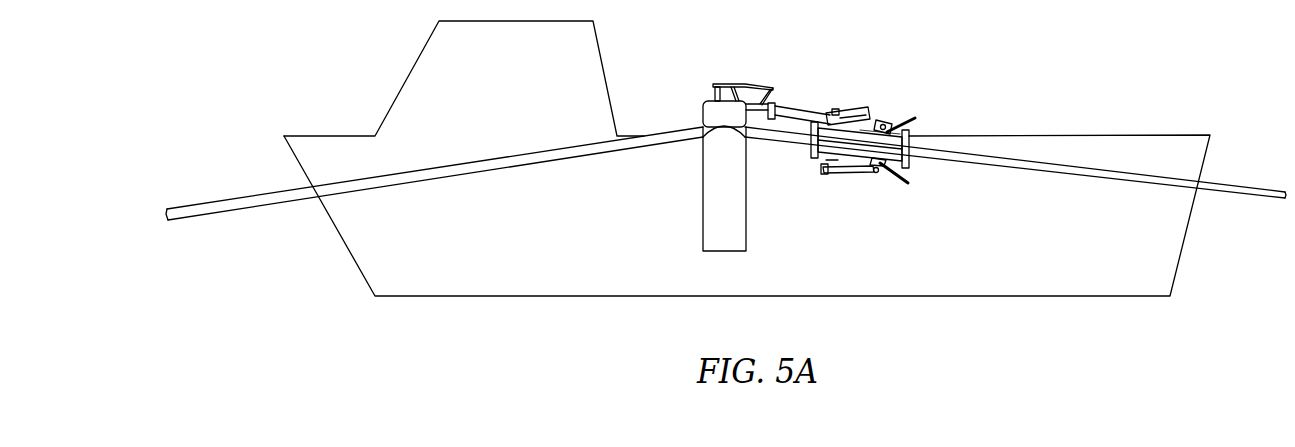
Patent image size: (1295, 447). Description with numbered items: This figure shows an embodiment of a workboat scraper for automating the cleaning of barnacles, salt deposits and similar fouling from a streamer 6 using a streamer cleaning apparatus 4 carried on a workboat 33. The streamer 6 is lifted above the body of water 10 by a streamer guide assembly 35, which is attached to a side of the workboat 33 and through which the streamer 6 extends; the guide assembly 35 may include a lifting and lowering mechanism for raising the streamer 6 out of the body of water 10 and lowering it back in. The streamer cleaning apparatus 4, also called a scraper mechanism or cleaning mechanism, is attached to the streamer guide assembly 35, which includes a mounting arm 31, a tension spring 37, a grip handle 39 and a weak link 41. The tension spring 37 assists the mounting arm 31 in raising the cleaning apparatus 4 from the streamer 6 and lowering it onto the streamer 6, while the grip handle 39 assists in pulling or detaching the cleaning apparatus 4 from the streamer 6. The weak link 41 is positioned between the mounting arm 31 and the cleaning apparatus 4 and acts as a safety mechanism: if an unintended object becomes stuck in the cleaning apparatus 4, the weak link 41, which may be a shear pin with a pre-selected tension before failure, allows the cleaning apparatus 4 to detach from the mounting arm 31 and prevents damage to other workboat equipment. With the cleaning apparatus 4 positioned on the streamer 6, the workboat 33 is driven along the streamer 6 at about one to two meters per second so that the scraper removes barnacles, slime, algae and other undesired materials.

The streamer cleaning apparatus 4 is at (930, 115).
The streamer 6 is at (1087, 163).
The body of water 10 is at (905, 342).
The mounting arm 31 is at (782, 108).
The workboat 33 is at (921, 227).
The streamer guide assembly 35 is at (715, 176).
The tension spring 37 is at (742, 85).
The grip handle 39 is at (867, 97).
The weak link 41 is at (878, 113).